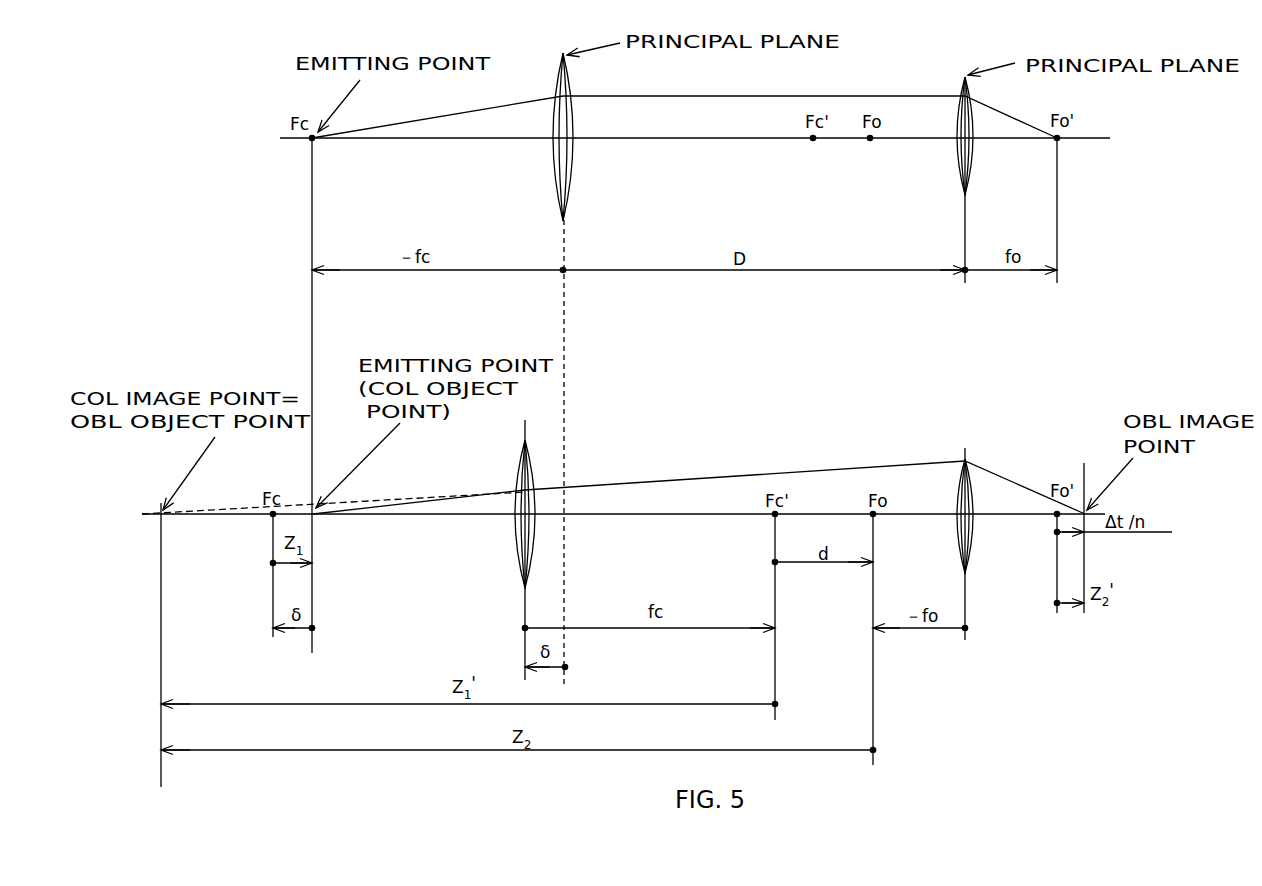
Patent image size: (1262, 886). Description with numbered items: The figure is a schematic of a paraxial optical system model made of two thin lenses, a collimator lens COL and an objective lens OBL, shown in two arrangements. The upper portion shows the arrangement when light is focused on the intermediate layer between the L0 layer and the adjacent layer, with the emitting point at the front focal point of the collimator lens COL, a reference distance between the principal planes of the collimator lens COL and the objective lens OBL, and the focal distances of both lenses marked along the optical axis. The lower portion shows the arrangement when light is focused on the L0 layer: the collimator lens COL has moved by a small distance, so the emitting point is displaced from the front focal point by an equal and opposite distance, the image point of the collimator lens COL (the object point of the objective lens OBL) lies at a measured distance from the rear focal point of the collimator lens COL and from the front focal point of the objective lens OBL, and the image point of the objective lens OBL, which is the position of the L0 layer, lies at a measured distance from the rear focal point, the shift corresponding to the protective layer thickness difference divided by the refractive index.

The collimator lens COL is at (549, 354).
The objective lens OBL is at (962, 343).
The L0 layer L0 is at (1083, 527).